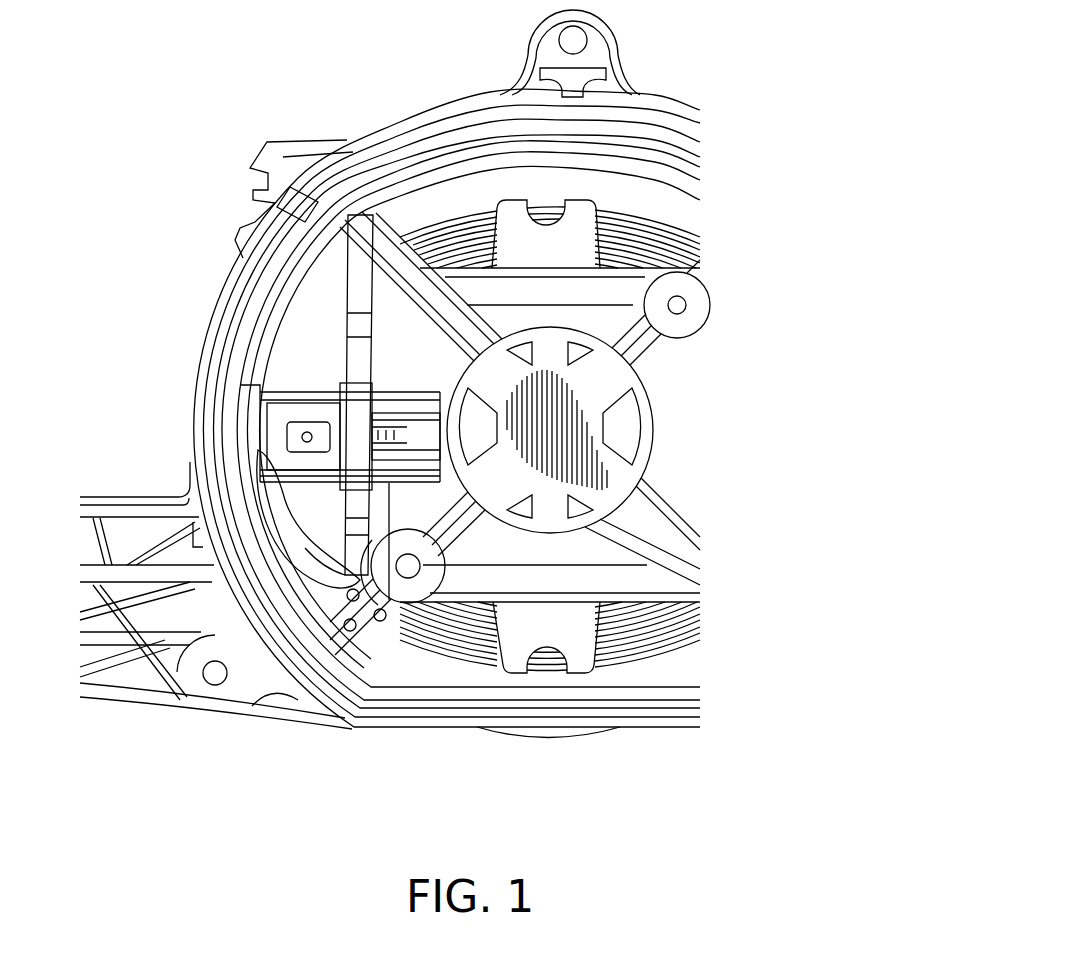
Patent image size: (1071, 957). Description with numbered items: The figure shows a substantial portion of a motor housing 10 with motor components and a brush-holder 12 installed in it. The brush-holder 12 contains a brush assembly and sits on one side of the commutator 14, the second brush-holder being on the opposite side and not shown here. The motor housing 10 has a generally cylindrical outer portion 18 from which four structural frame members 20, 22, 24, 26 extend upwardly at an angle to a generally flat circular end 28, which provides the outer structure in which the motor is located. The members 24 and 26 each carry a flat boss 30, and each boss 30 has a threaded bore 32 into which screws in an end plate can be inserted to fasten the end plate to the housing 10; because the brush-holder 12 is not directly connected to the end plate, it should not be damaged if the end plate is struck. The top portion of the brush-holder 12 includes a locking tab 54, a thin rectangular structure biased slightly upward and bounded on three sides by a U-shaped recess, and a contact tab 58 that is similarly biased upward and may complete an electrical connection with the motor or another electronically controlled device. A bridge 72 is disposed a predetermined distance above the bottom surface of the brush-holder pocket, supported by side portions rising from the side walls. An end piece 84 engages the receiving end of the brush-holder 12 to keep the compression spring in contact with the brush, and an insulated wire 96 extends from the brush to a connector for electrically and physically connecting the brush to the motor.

The motor housing 10 is at (744, 101).
The brush-holder 12 is at (389, 497).
The commutator 14 is at (388, 427).
The cylindrical outer portion 18 is at (292, 688).
The structural frame member 20 is at (347, 253).
The structural frame member 22 is at (700, 538).
The structural frame member 24 is at (470, 533).
The structural frame member 26 is at (695, 262).
The flat circular end 28 is at (588, 400).
The flat boss 30 is at (708, 318).
The threaded bore 32 is at (680, 305).
The locking tab 54 is at (322, 420).
The contact tab 58 is at (330, 435).
The bridge 72 is at (279, 379).
The end piece 84 is at (246, 417).
The insulated wire 96 is at (280, 532).